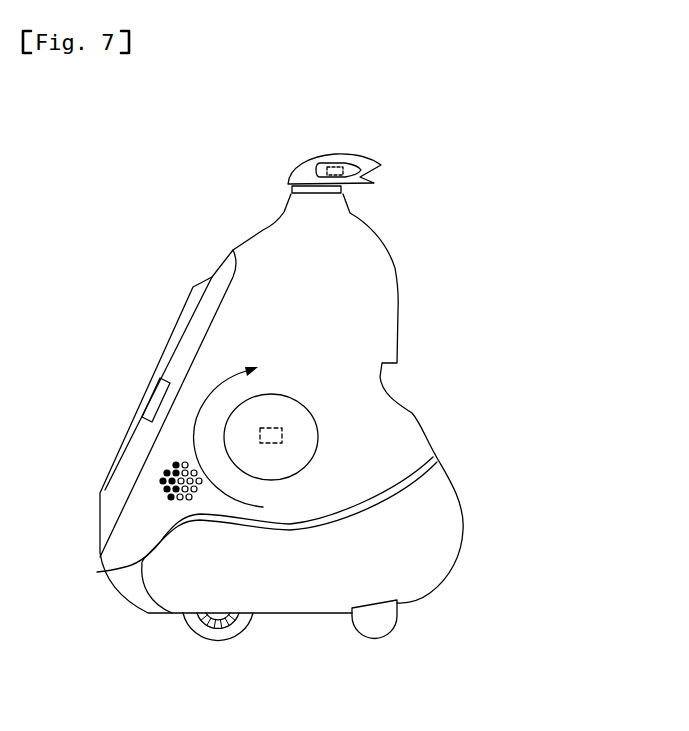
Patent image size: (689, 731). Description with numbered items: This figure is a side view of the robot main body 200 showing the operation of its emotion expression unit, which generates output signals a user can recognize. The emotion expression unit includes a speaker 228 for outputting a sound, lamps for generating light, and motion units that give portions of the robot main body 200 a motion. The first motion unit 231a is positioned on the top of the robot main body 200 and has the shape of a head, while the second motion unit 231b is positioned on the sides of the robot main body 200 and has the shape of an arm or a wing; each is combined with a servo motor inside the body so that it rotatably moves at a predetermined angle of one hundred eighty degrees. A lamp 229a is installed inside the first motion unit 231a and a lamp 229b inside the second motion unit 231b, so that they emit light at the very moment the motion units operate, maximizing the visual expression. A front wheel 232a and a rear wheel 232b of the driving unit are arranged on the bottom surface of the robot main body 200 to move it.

The robot main body 200 is at (404, 252).
The speaker 228 is at (163, 482).
The lamp 229a is at (329, 164).
The lamp 229b is at (282, 429).
The first motion unit 231a is at (374, 171).
The second motion unit 231b is at (298, 418).
The front wheel 232a is at (217, 641).
The rear wheel 232b is at (376, 638).